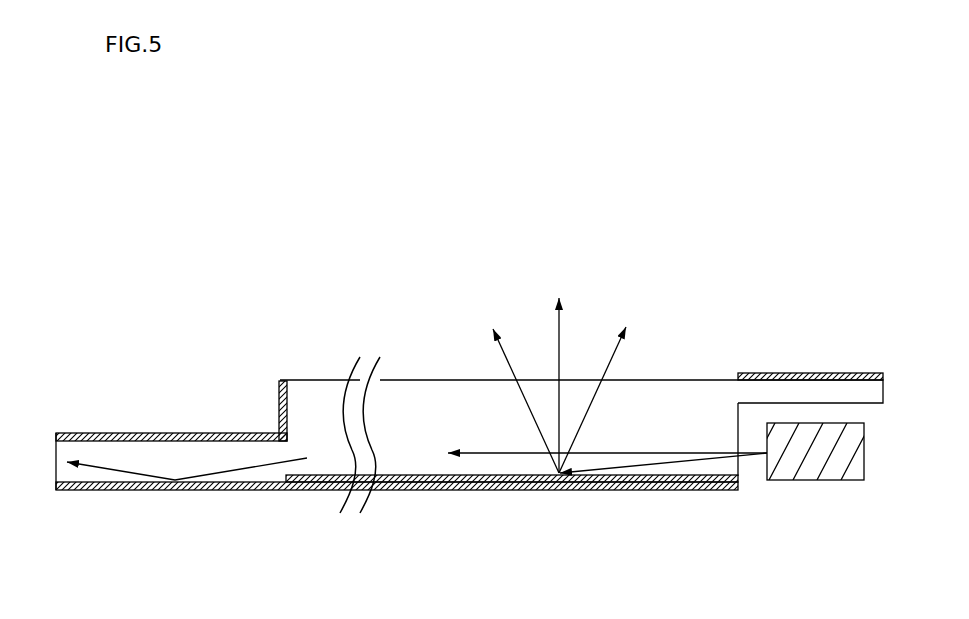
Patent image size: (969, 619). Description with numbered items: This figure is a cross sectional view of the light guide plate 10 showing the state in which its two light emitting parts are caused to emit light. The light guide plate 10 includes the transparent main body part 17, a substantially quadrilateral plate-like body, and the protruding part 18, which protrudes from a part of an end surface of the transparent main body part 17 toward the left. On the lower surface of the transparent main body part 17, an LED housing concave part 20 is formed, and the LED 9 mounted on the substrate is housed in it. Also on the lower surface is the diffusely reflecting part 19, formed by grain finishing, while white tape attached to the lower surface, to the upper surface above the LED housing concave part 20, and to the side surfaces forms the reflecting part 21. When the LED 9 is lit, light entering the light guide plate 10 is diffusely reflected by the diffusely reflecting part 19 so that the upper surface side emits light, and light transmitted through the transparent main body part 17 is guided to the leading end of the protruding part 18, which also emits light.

The LED 9 is at (815, 482).
The light guide plate 10 is at (309, 381).
The transparent main body part 17 is at (675, 377).
The protruding part 18 is at (57, 460).
The diffusely reflecting part 19 is at (433, 475).
The LED housing concave part 20 is at (750, 477).
The reflecting part 21 is at (167, 432).